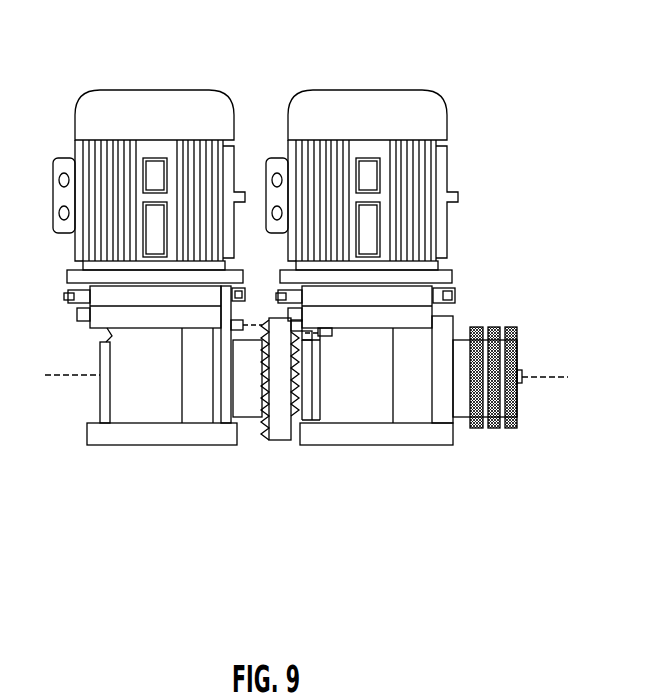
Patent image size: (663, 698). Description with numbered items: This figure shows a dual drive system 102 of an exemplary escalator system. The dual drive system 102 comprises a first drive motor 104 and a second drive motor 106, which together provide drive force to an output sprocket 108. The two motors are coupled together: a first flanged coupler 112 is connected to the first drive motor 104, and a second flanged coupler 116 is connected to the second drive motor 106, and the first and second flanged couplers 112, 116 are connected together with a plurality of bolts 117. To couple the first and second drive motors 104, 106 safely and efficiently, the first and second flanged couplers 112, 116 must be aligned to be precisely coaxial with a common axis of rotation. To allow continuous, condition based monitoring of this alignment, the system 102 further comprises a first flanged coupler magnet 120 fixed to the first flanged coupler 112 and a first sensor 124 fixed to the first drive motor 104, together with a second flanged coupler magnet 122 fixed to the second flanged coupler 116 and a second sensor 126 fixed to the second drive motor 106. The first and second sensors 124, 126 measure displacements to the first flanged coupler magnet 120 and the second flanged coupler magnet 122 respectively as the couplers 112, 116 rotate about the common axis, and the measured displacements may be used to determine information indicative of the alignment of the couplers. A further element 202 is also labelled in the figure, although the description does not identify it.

The dual drive system 102 is at (321, 317).
The first drive motor 104 is at (108, 432).
The second drive motor 106 is at (412, 407).
The output sprocket 108 is at (493, 323).
The first flanged coupler 112 is at (250, 390).
The second flanged coupler 116 is at (302, 388).
The bolts 117 is at (265, 402).
The first flanged coupler magnet 120 is at (263, 318).
The second flanged coupler magnet 122 is at (296, 320).
The first sensor 124 is at (237, 321).
The second sensor 126 is at (325, 328).
The frame 202 is at (557, 697).